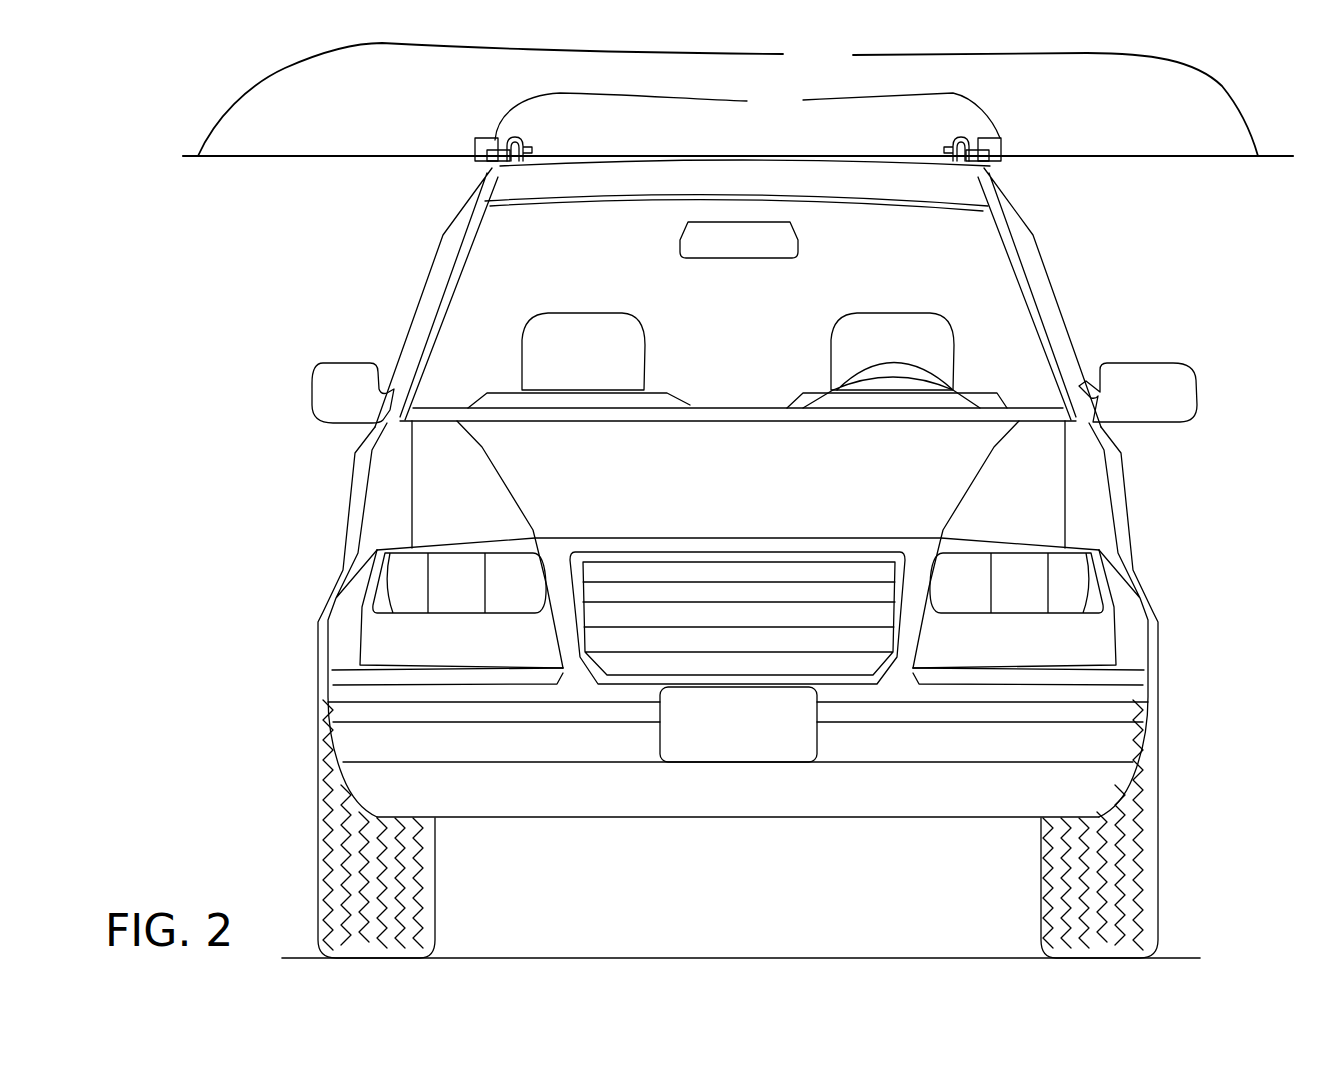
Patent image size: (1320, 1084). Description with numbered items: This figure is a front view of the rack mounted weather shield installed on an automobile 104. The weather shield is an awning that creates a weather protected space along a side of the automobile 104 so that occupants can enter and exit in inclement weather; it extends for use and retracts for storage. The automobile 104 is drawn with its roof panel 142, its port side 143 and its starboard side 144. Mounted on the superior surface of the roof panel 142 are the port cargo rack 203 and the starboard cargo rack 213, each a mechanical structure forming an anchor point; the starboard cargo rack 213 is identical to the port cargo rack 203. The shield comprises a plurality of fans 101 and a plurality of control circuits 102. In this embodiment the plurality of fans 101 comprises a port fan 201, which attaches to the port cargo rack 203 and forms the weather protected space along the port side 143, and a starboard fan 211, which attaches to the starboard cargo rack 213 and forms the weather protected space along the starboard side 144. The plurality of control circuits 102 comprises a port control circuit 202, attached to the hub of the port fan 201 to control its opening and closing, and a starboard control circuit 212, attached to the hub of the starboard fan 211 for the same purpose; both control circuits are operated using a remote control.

The plurality of fans 101 is at (728, 98).
The plurality of control circuits 102 is at (747, 111).
The automobile 104 is at (754, 537).
The roof panel 142 is at (676, 156).
The port side 143 is at (1130, 510).
The starboard side 144 is at (344, 500).
The port fan 201 is at (1140, 157).
The port control circuit 202 is at (1002, 138).
The port cargo rack 203 is at (952, 140).
The starboard fan 211 is at (338, 157).
The starboard control circuit 212 is at (483, 137).
The starboard cargo rack 213 is at (527, 145).